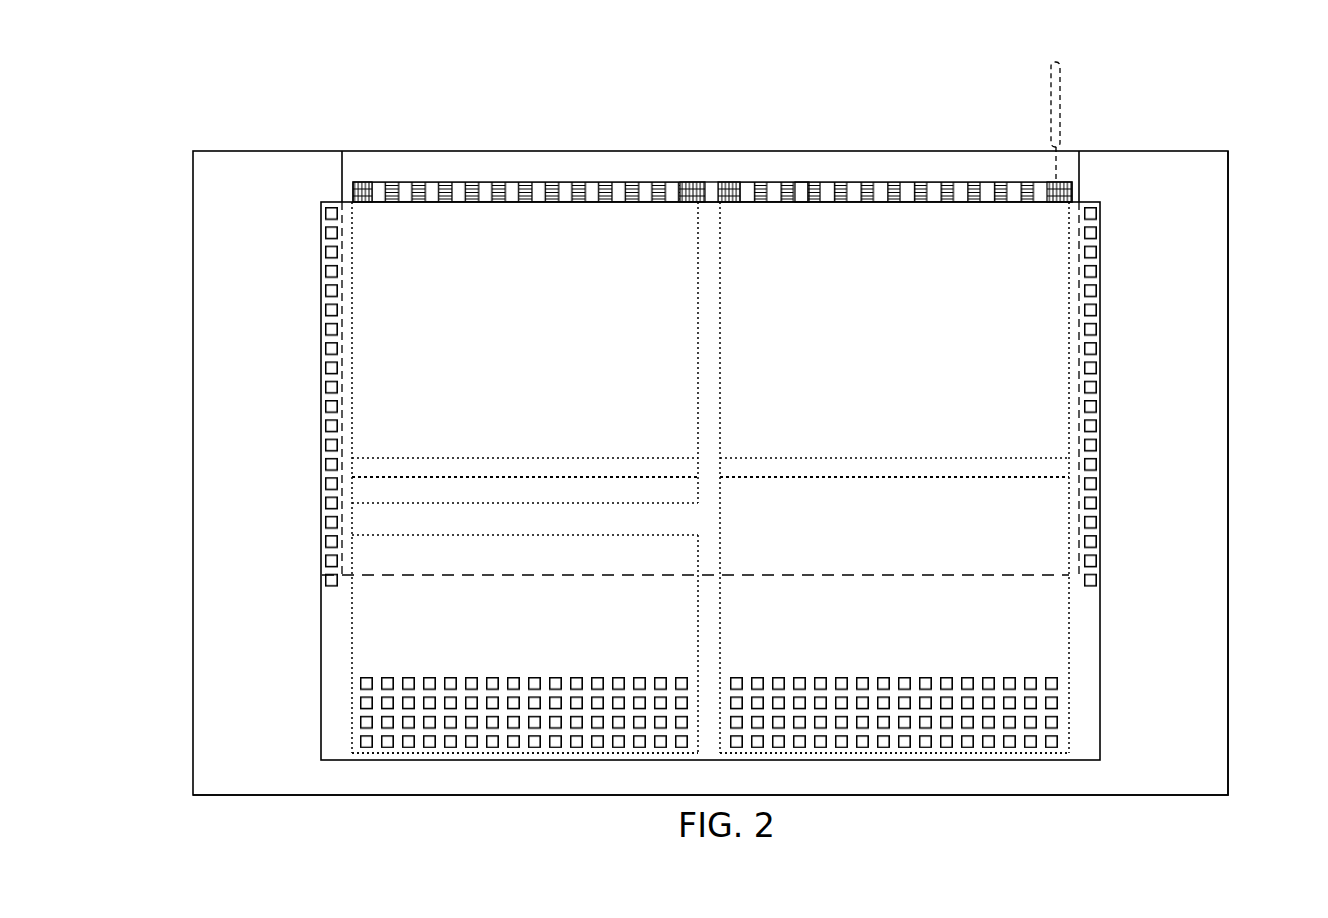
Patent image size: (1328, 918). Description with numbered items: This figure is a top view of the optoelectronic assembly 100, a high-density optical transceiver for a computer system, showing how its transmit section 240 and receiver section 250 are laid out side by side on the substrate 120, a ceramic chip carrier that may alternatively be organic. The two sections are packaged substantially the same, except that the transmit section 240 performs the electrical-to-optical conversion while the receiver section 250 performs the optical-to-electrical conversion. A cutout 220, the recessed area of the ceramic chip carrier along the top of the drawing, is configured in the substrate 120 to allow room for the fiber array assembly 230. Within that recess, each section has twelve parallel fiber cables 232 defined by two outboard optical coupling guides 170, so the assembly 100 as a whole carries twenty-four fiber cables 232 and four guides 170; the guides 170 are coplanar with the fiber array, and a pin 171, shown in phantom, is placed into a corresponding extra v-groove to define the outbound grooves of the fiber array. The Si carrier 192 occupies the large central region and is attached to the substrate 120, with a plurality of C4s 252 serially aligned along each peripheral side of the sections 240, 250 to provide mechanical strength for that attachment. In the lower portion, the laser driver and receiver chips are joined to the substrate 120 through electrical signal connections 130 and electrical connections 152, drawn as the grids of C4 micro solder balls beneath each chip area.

The optoelectronic assembly 100 is at (402, 806).
The substrate 120 is at (1170, 793).
The electrical signal connection 130 is at (380, 710).
The electrical connection 152 is at (1035, 701).
The optical coupling guides 170 is at (368, 182).
The pin 171 is at (1061, 81).
The Si carrier 192 is at (1020, 280).
The cutout 220 is at (393, 157).
The fiber array assembly 230 is at (478, 175).
The fiber cables 232 is at (797, 184).
The transmit section 240 is at (510, 768).
The receiver section 250 is at (933, 768).
The C4s 252 is at (328, 330).